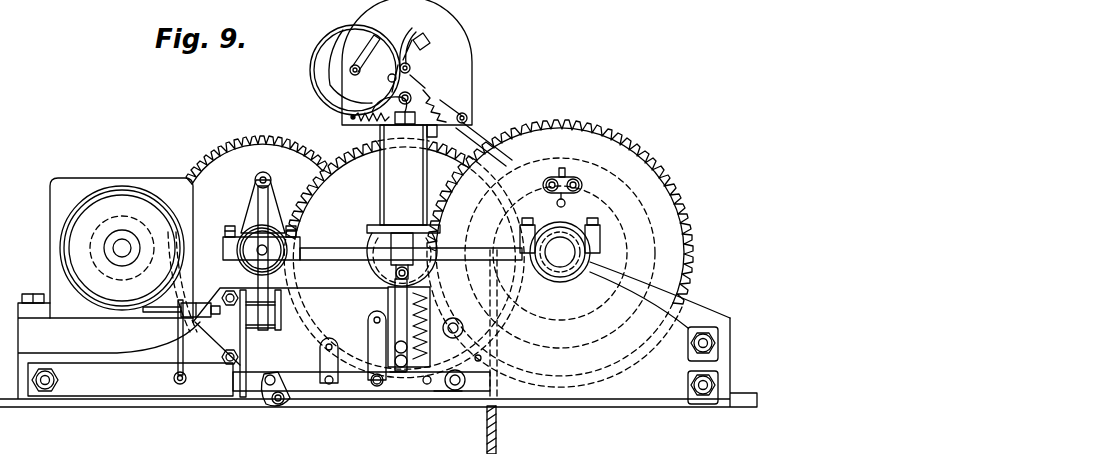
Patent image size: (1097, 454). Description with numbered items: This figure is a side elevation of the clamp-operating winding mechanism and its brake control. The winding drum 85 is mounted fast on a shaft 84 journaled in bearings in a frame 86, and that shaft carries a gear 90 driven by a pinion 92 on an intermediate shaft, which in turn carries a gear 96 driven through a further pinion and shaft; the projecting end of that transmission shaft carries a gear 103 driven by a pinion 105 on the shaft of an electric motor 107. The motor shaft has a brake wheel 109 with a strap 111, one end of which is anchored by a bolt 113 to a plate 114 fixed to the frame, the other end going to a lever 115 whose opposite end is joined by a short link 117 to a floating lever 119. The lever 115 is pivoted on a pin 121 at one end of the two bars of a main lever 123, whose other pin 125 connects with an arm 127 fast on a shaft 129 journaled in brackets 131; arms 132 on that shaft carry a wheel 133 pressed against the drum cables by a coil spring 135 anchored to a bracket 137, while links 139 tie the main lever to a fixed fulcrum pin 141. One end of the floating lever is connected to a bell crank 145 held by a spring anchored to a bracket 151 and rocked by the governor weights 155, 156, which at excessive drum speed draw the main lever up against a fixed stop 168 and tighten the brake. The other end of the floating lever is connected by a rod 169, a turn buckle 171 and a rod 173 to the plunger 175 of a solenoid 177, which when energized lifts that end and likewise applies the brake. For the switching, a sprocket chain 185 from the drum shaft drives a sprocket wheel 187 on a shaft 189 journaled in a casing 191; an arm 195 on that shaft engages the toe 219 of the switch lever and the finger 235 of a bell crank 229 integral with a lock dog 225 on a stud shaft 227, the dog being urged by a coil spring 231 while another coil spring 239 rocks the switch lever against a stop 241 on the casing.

The shaft 84 is at (559, 262).
The winding drum 85 is at (613, 210).
The frame 86 is at (637, 296).
The gear 90 is at (619, 141).
The pinion 92 is at (405, 214).
The gear 96 is at (349, 150).
The gear 103 is at (266, 148).
The pinion 105 is at (99, 231).
The electric motor 107 is at (50, 246).
The brake wheel 109 is at (82, 290).
The strap 111 is at (138, 312).
The bolt 113 is at (181, 314).
The plate 114 is at (186, 356).
The lever 115 is at (211, 380).
The short link 117 is at (318, 368).
The floating lever 119 is at (354, 380).
The pin 121 is at (270, 386).
The main lever 123 is at (397, 384).
The pin 125 is at (428, 385).
The arm 127 is at (440, 392).
The shaft 129 is at (466, 383).
The brackets 131 is at (496, 414).
The arms 132 is at (482, 358).
The wheel 133 is at (480, 339).
The coil spring 135 is at (428, 330).
The bracket 137 is at (430, 293).
The links 139 is at (369, 336).
The fixed fulcrum pin 141 is at (374, 320).
The bell crank 145 is at (259, 210).
The bracket 151 is at (257, 191).
The governor weight 155 is at (248, 241).
The governor weight 156 is at (246, 256).
The fixed stop 168 is at (280, 405).
The rod 169 is at (420, 340).
The turn buckle 171 is at (411, 300).
The rod 173 is at (432, 281).
The plunger 175 is at (416, 256).
The solenoid 177 is at (392, 171).
The sprocket chain 185 is at (480, 136).
The sprocket wheel 187 is at (326, 61).
The shaft 189 is at (330, 84).
The casing 191 is at (456, 31).
The arm 195 is at (368, 42).
The toe 219 is at (412, 44).
The lock dog 225 is at (420, 74).
The stud shaft 227 is at (430, 100).
The bell crank 229 is at (422, 123).
The coil spring 231 is at (351, 117).
The finger 235 is at (383, 104).
The coil spring 239 is at (455, 100).
The stop 241 is at (428, 50).